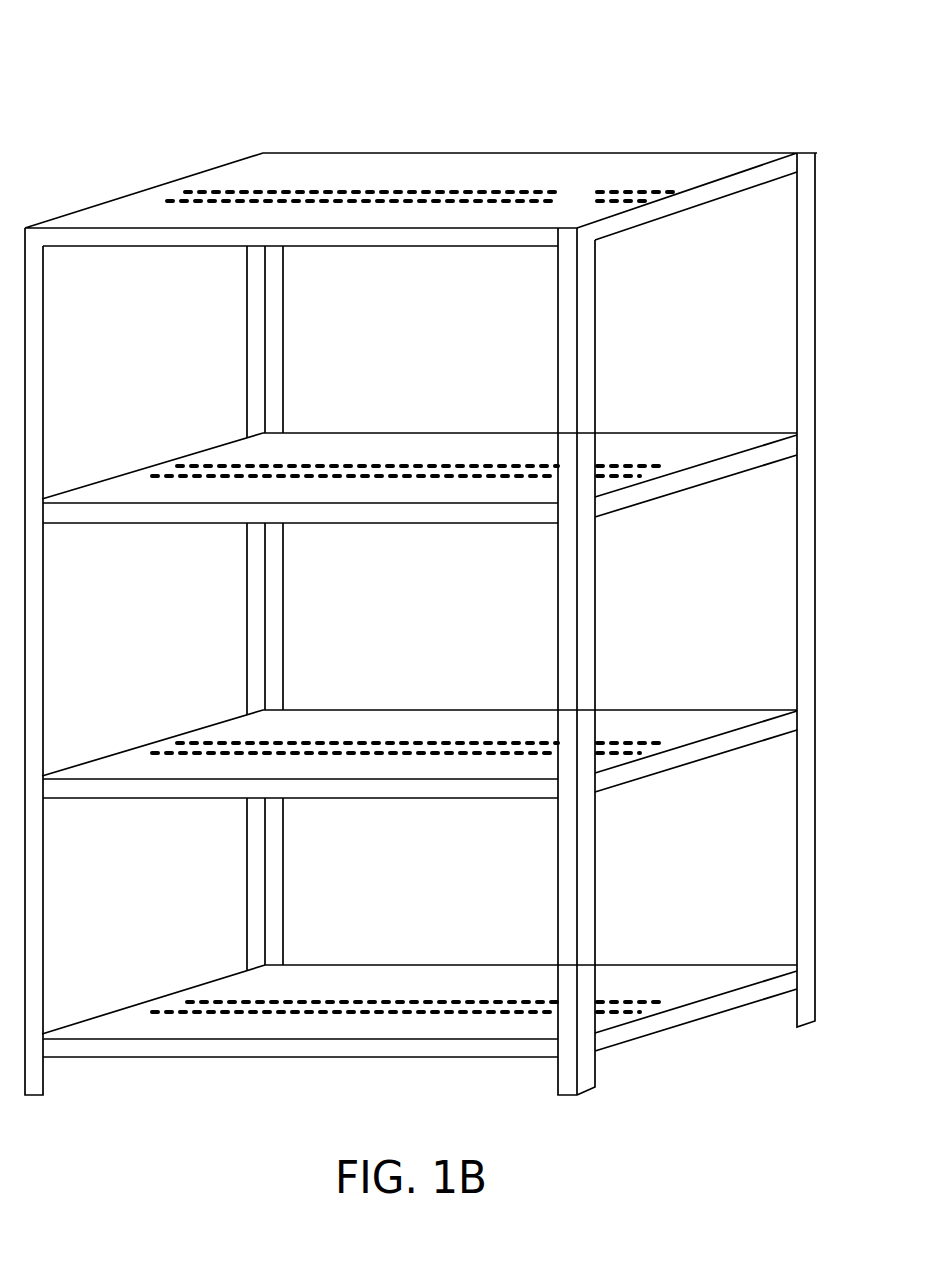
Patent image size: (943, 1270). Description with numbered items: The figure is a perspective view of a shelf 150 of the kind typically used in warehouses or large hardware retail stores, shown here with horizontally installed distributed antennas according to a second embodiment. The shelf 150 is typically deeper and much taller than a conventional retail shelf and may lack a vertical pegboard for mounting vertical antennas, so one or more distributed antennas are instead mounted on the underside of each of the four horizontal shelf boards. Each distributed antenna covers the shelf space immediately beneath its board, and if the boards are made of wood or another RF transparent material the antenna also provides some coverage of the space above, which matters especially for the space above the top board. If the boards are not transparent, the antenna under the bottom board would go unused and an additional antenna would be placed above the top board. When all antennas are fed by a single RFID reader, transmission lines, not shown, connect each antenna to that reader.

The shelf 150 is at (257, 90).